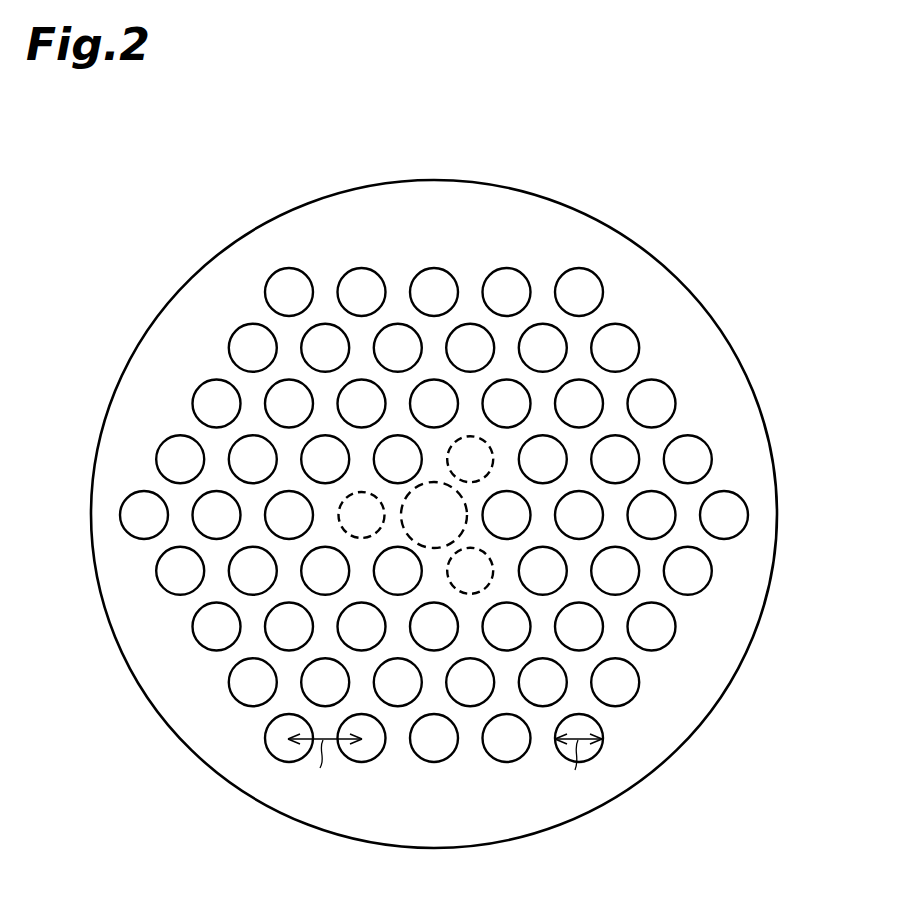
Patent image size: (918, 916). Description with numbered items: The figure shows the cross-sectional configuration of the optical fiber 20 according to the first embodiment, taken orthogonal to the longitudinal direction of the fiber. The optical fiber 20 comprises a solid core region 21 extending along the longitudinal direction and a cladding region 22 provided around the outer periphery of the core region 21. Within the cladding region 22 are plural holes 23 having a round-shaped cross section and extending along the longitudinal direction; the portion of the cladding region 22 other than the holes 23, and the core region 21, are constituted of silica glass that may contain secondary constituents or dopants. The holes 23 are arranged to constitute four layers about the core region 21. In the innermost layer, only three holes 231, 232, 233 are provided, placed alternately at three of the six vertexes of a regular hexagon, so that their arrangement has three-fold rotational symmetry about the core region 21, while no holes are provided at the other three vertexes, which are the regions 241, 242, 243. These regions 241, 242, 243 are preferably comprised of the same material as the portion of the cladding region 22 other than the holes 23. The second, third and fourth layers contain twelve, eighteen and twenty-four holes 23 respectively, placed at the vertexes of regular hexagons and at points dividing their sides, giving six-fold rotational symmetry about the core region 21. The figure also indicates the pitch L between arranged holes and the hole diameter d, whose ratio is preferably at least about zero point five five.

The optical fiber 20 is at (693, 218).
The core region 21 is at (458, 520).
The cladding region 22 is at (772, 443).
The holes 23 is at (695, 580).
The hole 231 is at (383, 458).
The hole 232 is at (383, 572).
The hole 233 is at (498, 503).
The region 241 is at (347, 517).
The region 242 is at (480, 582).
The region 243 is at (480, 445).